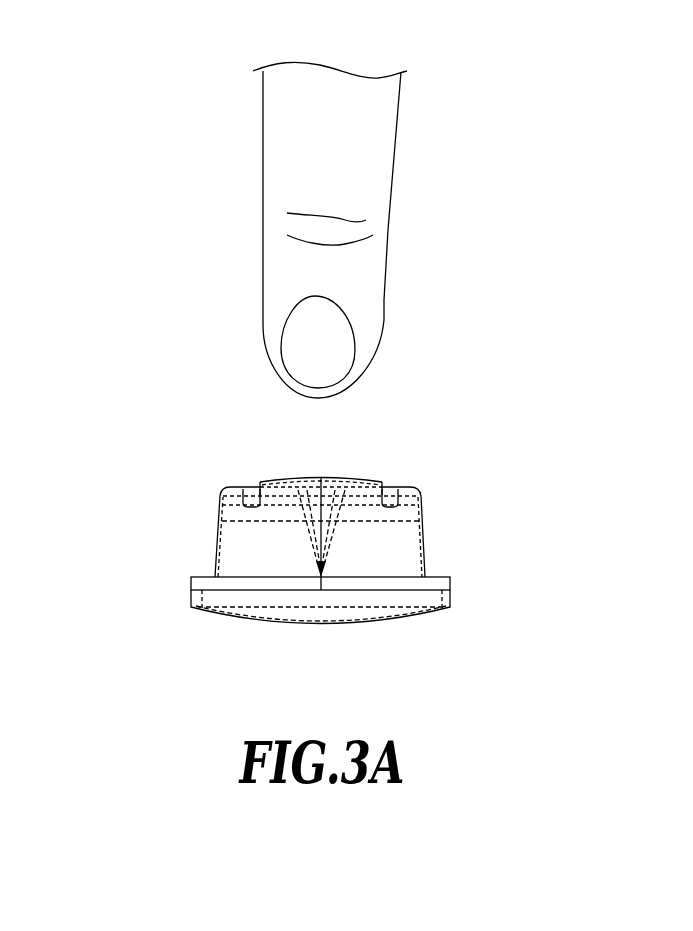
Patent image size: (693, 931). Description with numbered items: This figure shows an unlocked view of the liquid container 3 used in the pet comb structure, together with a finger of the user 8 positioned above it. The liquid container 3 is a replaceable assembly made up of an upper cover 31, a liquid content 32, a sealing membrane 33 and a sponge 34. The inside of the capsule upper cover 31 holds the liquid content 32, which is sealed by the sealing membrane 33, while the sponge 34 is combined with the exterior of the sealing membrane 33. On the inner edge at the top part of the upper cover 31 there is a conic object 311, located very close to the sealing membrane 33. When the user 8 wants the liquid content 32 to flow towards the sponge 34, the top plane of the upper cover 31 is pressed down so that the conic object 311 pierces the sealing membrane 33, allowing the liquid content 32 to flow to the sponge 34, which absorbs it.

The user 8 is at (388, 220).
The liquid container 3 is at (362, 528).
The upper cover 31 is at (422, 492).
The conic object 311 is at (307, 533).
The liquid content 32 is at (398, 537).
The sealing membrane 33 is at (447, 583).
The sponge 34 is at (387, 623).